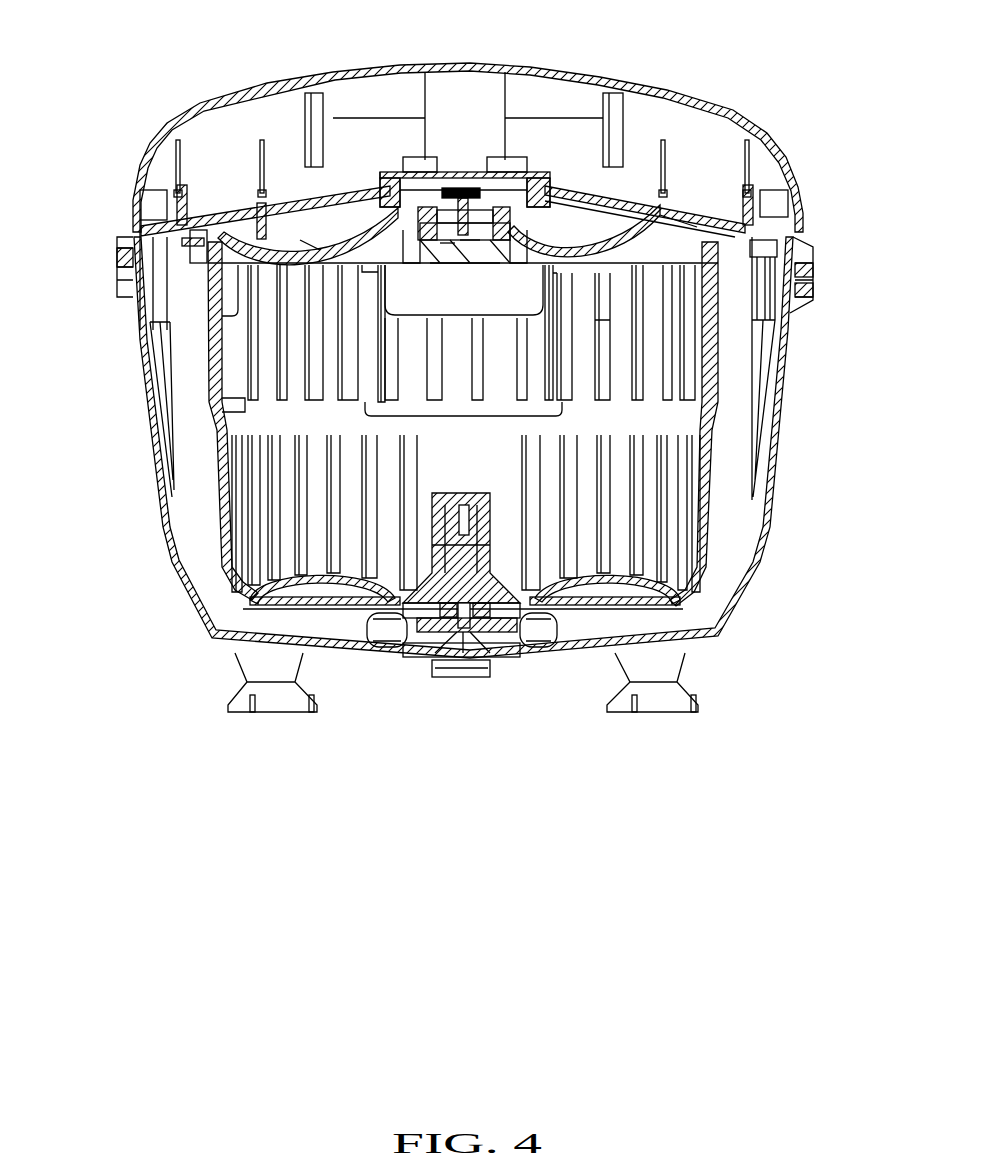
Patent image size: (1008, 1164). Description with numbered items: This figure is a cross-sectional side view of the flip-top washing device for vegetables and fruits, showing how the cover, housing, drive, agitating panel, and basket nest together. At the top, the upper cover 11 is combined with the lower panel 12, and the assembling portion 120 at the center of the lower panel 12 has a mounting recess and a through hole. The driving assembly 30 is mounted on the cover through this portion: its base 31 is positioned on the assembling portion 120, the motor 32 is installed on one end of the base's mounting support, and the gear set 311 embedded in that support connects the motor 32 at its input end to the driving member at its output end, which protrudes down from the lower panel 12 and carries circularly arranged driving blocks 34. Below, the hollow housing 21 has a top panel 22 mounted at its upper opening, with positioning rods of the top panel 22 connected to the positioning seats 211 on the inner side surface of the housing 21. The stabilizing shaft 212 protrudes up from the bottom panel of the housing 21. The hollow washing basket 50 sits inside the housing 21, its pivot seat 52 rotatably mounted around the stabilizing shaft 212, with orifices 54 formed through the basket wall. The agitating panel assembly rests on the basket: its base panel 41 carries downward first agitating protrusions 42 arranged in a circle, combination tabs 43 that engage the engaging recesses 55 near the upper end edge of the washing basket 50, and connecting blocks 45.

The upper cover 11 is at (165, 140).
The lower panel 12 is at (698, 213).
The assembling portion 120 is at (550, 190).
The housing 21 is at (733, 600).
The positioning seats 211 is at (767, 360).
The stabilizing shaft 212 is at (495, 645).
The top panel 22 is at (128, 231).
The driving assembly 30 is at (520, 122).
The base 31 is at (383, 167).
The gear set 311 is at (548, 190).
The motor 32 is at (455, 82).
The driving blocks 34 is at (470, 240).
The base panel 41 is at (777, 217).
The first agitating protrusions 42 is at (310, 250).
The combination tabs 43 is at (212, 284).
The connecting blocks 45 is at (447, 243).
The washing basket 50 is at (212, 489).
The pivot seat 52 is at (457, 572).
The orifices 54 is at (660, 513).
The engaging recesses 55 is at (228, 281).